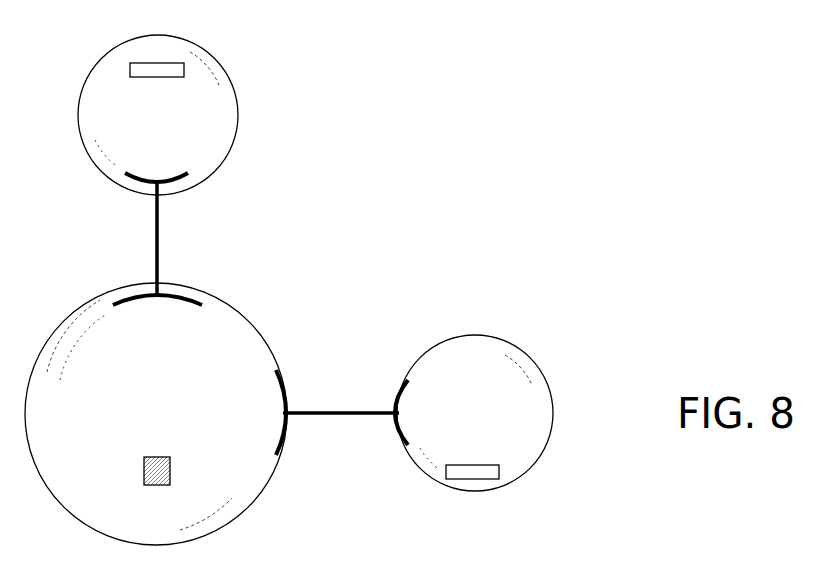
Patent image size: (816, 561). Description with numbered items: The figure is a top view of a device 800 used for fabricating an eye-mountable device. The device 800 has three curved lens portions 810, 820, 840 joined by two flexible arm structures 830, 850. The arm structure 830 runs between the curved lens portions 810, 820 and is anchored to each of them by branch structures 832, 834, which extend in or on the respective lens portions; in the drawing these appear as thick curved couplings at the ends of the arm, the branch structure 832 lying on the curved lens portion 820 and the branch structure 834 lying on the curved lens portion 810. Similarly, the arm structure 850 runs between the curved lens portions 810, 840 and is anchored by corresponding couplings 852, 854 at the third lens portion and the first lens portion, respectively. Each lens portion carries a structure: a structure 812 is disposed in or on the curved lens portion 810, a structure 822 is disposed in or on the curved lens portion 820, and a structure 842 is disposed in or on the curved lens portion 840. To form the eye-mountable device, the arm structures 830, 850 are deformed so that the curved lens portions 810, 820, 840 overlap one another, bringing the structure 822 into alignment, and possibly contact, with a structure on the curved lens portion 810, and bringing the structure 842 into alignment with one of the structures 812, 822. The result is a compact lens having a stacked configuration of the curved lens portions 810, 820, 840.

The device 800 is at (463, 167).
The curved lens portion 810 is at (177, 385).
The structure 812 is at (139, 466).
The curved lens portion 820 is at (491, 412).
The structure 822 is at (477, 481).
The flexible arm structure 830 is at (369, 406).
The branch structure 832 is at (396, 438).
The branch structure 834 is at (285, 447).
The curved lens portion 840 is at (177, 129).
The structure 842 is at (176, 62).
The flexible arm structure 850 is at (162, 223).
The connector end coupling at third sphere 852 is at (126, 181).
The connector end coupling at first sphere 854 is at (129, 297).